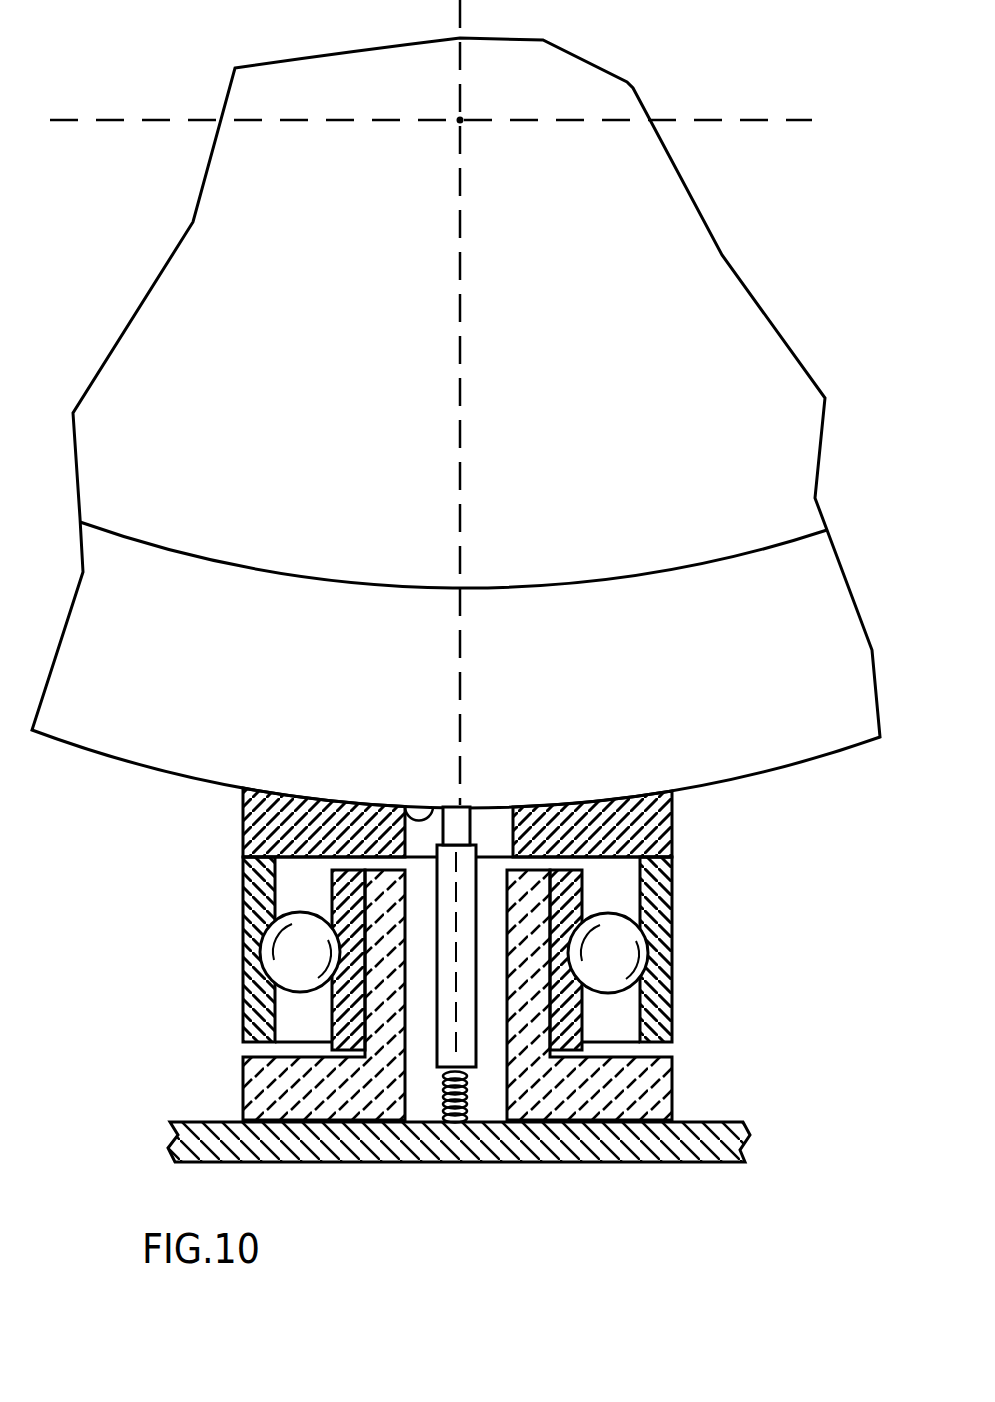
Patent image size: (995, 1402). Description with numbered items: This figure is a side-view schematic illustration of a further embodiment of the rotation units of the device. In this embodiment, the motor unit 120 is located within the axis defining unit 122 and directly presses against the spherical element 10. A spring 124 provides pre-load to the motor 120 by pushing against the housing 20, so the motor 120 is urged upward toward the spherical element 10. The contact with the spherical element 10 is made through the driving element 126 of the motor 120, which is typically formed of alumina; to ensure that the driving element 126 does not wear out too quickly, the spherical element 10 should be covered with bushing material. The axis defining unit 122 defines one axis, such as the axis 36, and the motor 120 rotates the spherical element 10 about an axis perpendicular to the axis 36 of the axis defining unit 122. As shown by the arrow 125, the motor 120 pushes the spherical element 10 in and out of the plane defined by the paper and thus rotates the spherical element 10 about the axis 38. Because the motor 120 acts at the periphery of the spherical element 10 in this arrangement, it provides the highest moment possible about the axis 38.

The spherical element 10 is at (620, 757).
The housing 20 is at (710, 1122).
The axis 36 is at (458, 398).
The axis 38 is at (700, 124).
The motor unit 120 is at (472, 1050).
The axis defining unit 122 is at (712, 947).
The spring 124 is at (445, 1093).
The arrow 125 is at (383, 738).
The driving element 126 is at (457, 822).